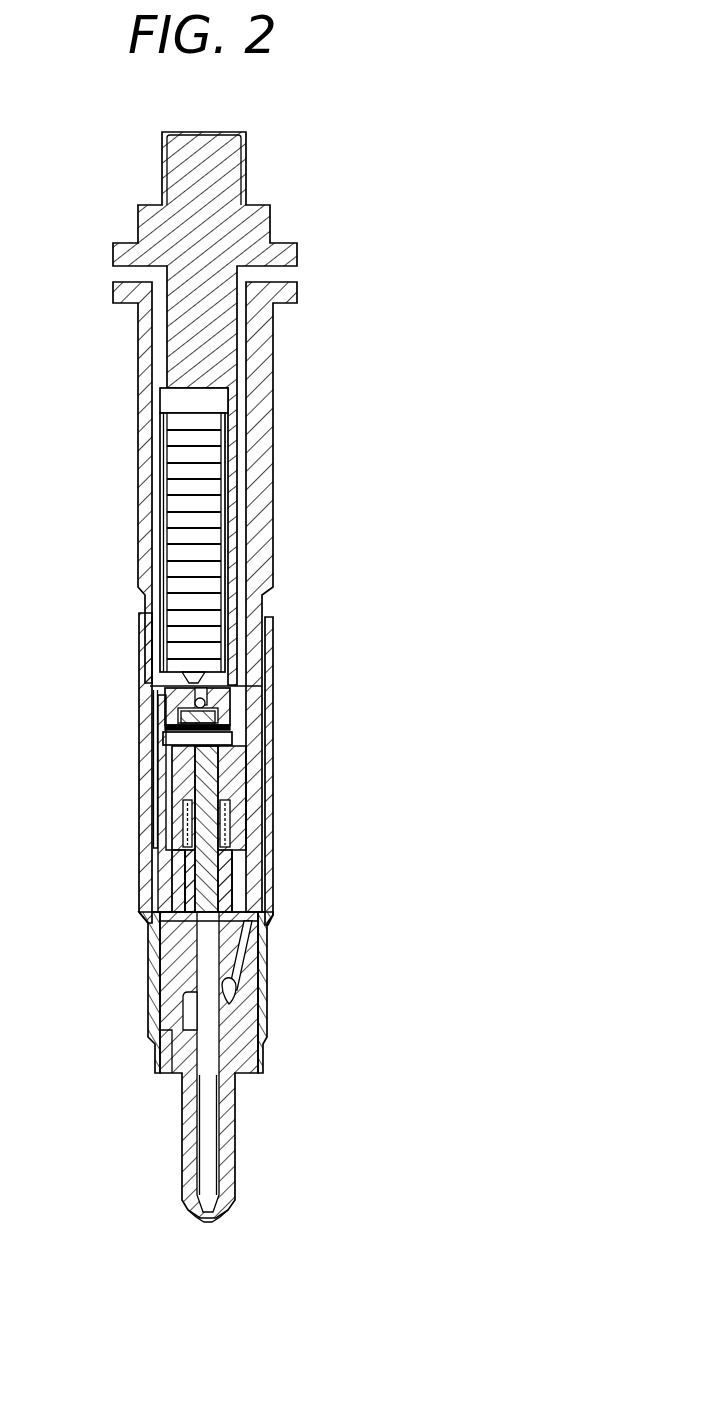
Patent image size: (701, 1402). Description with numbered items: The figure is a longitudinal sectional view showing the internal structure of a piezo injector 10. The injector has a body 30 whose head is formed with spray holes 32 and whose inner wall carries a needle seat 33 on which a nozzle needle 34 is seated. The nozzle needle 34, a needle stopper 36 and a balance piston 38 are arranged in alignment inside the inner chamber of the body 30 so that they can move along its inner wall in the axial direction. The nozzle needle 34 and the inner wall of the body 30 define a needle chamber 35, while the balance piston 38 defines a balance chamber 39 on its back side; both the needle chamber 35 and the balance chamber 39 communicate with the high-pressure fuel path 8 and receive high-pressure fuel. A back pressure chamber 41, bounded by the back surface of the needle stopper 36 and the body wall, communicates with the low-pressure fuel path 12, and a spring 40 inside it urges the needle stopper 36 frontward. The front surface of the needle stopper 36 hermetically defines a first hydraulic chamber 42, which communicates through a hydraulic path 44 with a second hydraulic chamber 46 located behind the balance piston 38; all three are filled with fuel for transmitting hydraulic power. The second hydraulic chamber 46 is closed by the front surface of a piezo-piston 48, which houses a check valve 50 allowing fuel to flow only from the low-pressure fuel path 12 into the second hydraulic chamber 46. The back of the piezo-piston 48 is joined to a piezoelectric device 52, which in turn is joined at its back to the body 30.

The piezo injector 10 is at (298, 156).
The high-pressure fuel path 8 is at (280, 271).
The low-pressure fuel path 12 is at (118, 271).
The body 30 is at (275, 445).
The piezoelectric device 52 is at (172, 470).
The check valve 50 is at (172, 697).
The second hydraulic chamber 46 is at (167, 730).
The balance chamber 39 is at (232, 740).
The hydraulic path 44 is at (165, 880).
The piezo-piston 48 is at (156, 694).
The balance piston 38 is at (212, 760).
The needle stopper 36 is at (225, 877).
The spring 40 is at (185, 818).
The back pressure chamber 41 is at (224, 822).
The nozzle needle 34 is at (203, 1003).
The first hydraulic chamber 42 is at (252, 917).
The needle chamber 35 is at (232, 985).
The needle seat 33 is at (222, 1196).
The spray holes 32 is at (218, 1224).